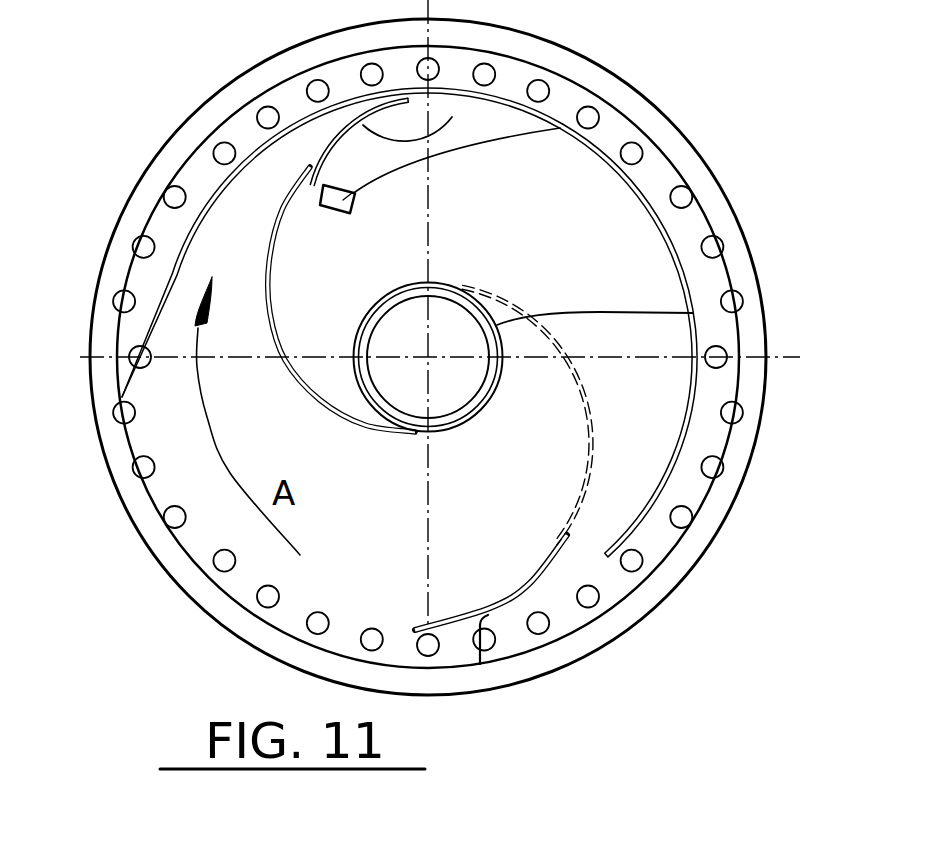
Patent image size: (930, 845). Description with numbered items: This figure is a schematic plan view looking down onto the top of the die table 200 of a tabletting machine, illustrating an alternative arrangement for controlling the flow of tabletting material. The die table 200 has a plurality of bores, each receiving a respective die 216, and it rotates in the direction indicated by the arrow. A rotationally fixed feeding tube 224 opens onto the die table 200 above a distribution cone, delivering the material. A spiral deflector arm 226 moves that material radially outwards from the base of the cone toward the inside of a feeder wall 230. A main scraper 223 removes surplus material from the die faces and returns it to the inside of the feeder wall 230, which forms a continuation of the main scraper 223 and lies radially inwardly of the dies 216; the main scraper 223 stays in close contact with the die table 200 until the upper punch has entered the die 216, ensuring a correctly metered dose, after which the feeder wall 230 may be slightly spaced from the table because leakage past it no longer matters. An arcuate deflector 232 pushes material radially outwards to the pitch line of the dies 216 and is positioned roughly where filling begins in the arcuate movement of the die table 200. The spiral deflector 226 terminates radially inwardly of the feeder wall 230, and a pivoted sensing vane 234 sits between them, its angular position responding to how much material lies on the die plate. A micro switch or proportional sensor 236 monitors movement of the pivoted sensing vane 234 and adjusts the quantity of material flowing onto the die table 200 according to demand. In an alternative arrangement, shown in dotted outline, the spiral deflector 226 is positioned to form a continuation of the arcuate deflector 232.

The die table 200 is at (598, 263).
The die 216 is at (632, 152).
The main scraper 223 is at (137, 323).
The feeding tube 224 is at (693, 313).
The spiral deflector arm 226 is at (305, 385).
The feeder wall 230 is at (690, 435).
The arcuate deflector 232 is at (460, 627).
The pivoted sensing vane 234 is at (452, 117).
The micro switch or proportional sensor 236 is at (562, 126).